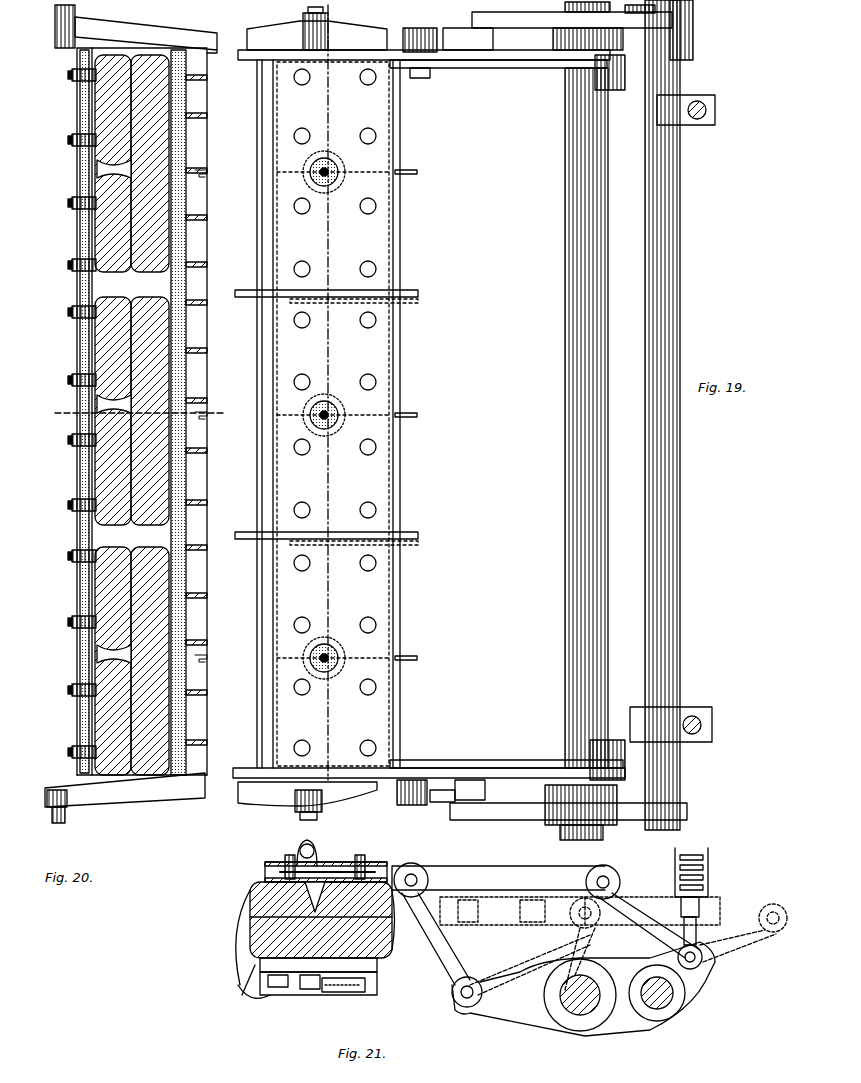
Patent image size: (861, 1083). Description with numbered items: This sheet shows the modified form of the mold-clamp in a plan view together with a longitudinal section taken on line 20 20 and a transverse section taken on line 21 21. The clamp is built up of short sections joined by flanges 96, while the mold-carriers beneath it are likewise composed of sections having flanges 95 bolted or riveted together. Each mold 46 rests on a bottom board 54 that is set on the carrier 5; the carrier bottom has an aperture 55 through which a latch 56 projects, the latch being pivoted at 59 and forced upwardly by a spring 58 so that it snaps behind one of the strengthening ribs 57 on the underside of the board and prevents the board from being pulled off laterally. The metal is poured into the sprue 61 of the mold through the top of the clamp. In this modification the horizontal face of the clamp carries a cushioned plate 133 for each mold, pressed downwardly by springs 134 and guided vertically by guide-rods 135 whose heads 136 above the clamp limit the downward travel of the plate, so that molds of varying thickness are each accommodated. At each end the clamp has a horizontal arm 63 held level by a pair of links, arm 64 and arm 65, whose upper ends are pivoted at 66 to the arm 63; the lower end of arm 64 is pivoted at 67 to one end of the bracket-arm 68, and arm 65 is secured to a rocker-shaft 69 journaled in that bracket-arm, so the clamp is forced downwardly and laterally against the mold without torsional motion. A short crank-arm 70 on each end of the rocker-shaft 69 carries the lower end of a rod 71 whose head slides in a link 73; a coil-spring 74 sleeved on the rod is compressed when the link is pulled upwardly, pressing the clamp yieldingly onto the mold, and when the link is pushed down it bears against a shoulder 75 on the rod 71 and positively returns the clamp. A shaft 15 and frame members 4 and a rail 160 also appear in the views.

In FIG. 20, the frame bar 4 is at (118, 30).
In FIG. 19, the frame bar 4 is at (345, 34).
In FIG. 21, the frame bar 4 is at (307, 846).
In FIG. 21, the carrier 5 is at (377, 984).
In FIG. 19, the shaft 15 is at (600, 587).
In FIG. 21, the shaft 15 is at (585, 1012).
In FIG. 19, the section line 20 is at (334, 416).
In FIG. 20, the section line 21 is at (135, 413).
In FIG. 20, the mold 46 is at (160, 198).
In FIG. 21, the mold 46 is at (252, 888).
In FIG. 20, the bottom board 54 is at (188, 228).
In FIG. 21, the bottom board 54 is at (380, 956).
In FIG. 21, the aperture 55 is at (282, 990).
In FIG. 21, the latch 56 is at (254, 1001).
In FIG. 21, the rib 57 is at (258, 985).
In FIG. 21, the spring 58 is at (340, 992).
In FIG. 21, the pivot 59 is at (312, 990).
In FIG. 21, the sprue 61 is at (380, 912).
In FIG. 19, the horizontal arm 63 is at (472, 60).
In FIG. 21, the horizontal arm 63 is at (490, 872).
In FIG. 21, the arm 64 is at (440, 945).
In FIG. 19, the arm 65 is at (626, 95).
In FIG. 21, the arm 65 is at (640, 940).
In FIG. 21, the pivot 66 is at (415, 880).
In FIG. 21, the pivot 67 is at (470, 998).
In FIG. 19, the bracket-arm 68 is at (488, 812).
In FIG. 21, the bracket-arm 68 is at (520, 1022).
In FIG. 19, the rocker-shaft 69 is at (678, 622).
In FIG. 21, the rocker-shaft 69 is at (662, 1010).
In FIG. 19, the crank-arm 70 is at (690, 125).
In FIG. 21, the crank-arm 70 is at (695, 965).
In FIG. 21, the rod 71 is at (760, 935).
In FIG. 21, the link 73 is at (708, 880).
In FIG. 21, the coil-spring 74 is at (704, 866).
In FIG. 21, the shoulder 75 is at (700, 922).
In FIG. 19, the flange 95 is at (248, 296).
In FIG. 19, the flange 96 is at (412, 298).
In FIG. 20, the cushioned plate 133 is at (92, 100).
In FIG. 21, the cushioned plate 133 is at (320, 880).
In FIG. 20, the spring 134 is at (70, 78).
In FIG. 21, the spring 134 is at (370, 868).
In FIG. 20, the guide-rod 135 is at (62, 411).
In FIG. 21, the guide-rod 135 is at (300, 866).
In FIG. 20, the head 136 is at (68, 72).
In FIG. 19, the head 136 is at (375, 136).
In FIG. 21, the head 136 is at (300, 848).
In FIG. 20, the rail 160 is at (79, 236).
In FIG. 21, the rail 160 is at (270, 864).